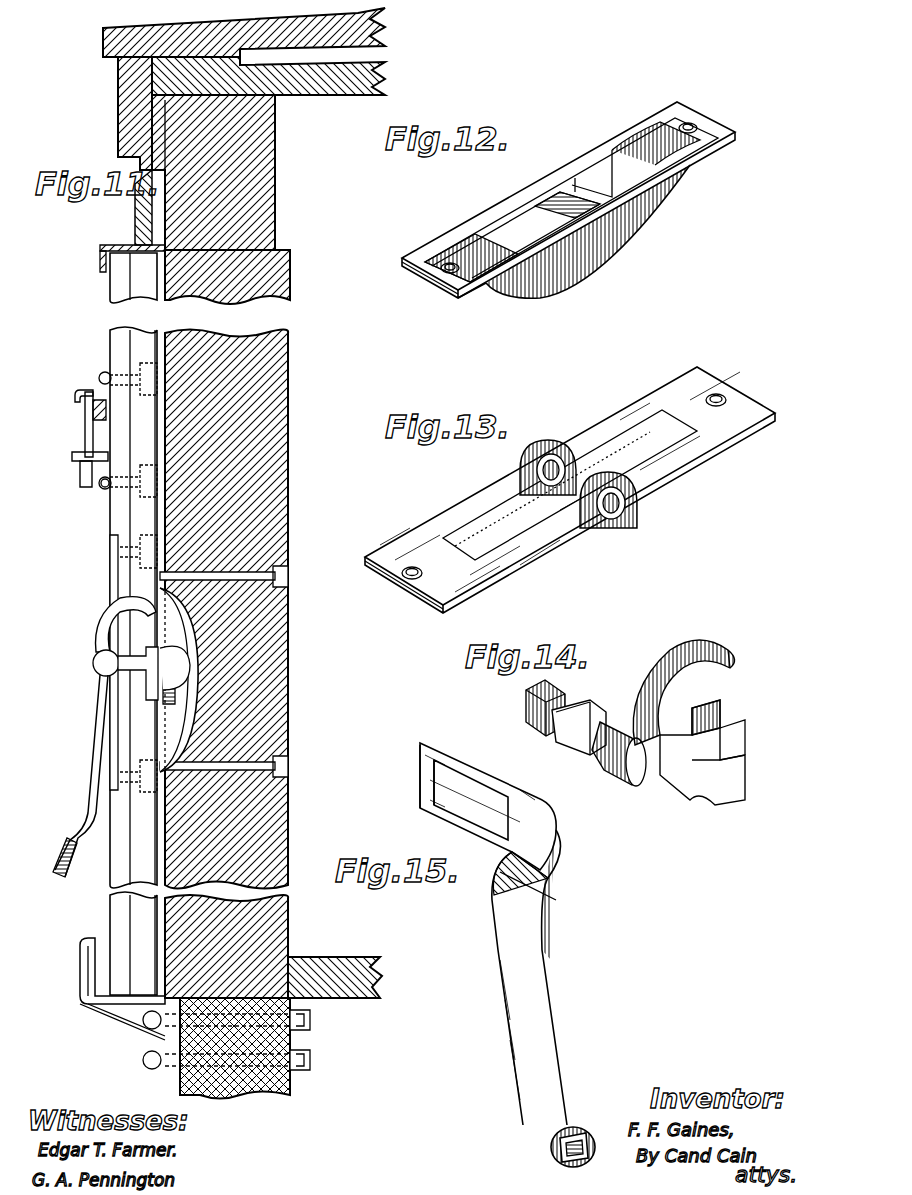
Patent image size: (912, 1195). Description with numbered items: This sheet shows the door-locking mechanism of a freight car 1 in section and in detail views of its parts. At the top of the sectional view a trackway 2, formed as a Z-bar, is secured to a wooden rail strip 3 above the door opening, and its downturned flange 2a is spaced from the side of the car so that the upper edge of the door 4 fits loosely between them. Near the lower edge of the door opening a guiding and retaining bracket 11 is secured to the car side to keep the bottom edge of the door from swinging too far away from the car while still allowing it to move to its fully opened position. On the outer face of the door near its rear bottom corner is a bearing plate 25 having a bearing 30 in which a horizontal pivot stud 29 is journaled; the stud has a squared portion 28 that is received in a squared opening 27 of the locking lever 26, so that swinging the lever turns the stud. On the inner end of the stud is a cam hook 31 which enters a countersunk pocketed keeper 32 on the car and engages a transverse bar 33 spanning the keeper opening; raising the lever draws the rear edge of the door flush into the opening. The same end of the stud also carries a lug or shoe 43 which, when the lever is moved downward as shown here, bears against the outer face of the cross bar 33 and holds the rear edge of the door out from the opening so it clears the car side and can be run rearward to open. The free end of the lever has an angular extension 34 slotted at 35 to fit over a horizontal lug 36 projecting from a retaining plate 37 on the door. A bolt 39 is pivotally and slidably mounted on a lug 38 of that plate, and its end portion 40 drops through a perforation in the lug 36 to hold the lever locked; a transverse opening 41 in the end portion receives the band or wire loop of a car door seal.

In FIG. 11, the freight car 1 is at (262, 483).
In FIG. 11, the trackway 2 is at (105, 246).
In FIG. 11, the downturned flange 2a is at (100, 258).
In FIG. 11, the wooden rail strip 3 is at (152, 178).
In FIG. 11, the door 4 is at (126, 343).
In FIG. 11, the guiding and retaining brackets 11 is at (112, 1004).
In FIG. 11, the bracket or bearing plate 25 is at (112, 570).
In FIG. 13, the bracket or bearing plate 25 is at (690, 447).
In FIG. 11, the locking lever 26 is at (101, 737).
In FIG. 15, the locking lever 26 is at (545, 1012).
In FIG. 15, the squared opening 27 is at (575, 1135).
In FIG. 14, the squared portion 28 is at (583, 710).
In FIG. 11, the horizontal pivot stud 29 is at (94, 668).
In FIG. 14, the horizontal pivot stud 29 is at (610, 728).
In FIG. 13, the bearing 30 is at (542, 450).
In FIG. 11, the cam hook 31 is at (118, 600).
In FIG. 14, the cam hook 31 is at (682, 665).
In FIG. 11, the keeper 32 is at (186, 688).
In FIG. 12, the keeper 32 is at (632, 222).
In FIG. 11, the transverse bar 33 is at (170, 698).
In FIG. 12, the transverse bar 33 is at (527, 205).
In FIG. 11, the angular extension or lug 34 is at (60, 866).
In FIG. 15, the angular extension or lug 34 is at (478, 780).
In FIG. 15, the slot 35 is at (471, 800).
In FIG. 11, the horizontal lug 36 is at (78, 462).
In FIG. 11, the retaining plate 37 is at (104, 487).
In FIG. 11, the lug 38 is at (93, 434).
In FIG. 11, the bolt 39 is at (86, 421).
In FIG. 11, the end portion 40 is at (92, 478).
In FIG. 11, the transverse opening 41 is at (106, 450).
In FIG. 11, the lug or shoe 43 is at (150, 682).
In FIG. 14, the lug or shoe 43 is at (732, 755).